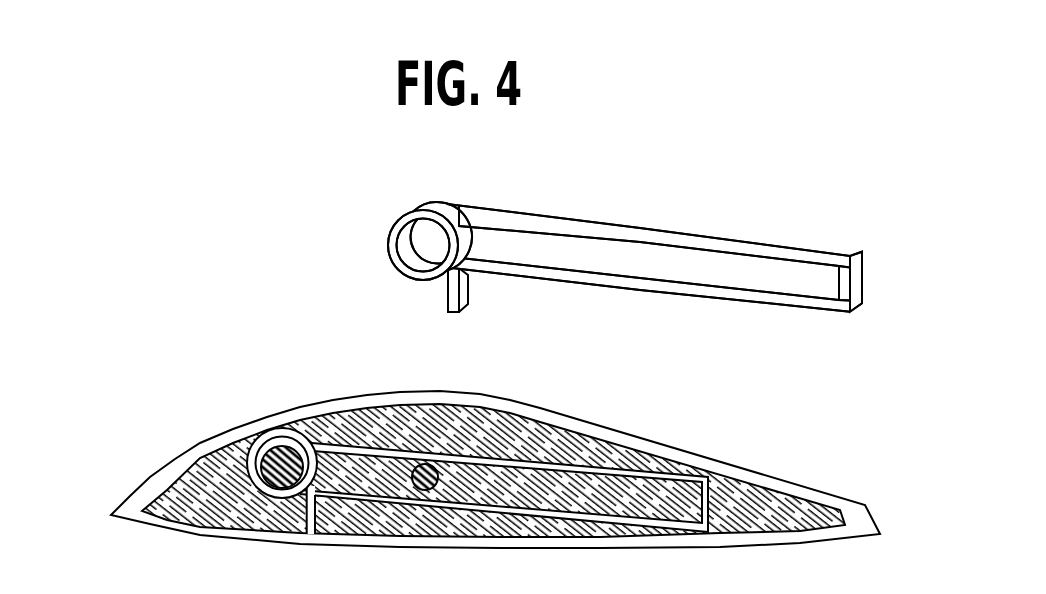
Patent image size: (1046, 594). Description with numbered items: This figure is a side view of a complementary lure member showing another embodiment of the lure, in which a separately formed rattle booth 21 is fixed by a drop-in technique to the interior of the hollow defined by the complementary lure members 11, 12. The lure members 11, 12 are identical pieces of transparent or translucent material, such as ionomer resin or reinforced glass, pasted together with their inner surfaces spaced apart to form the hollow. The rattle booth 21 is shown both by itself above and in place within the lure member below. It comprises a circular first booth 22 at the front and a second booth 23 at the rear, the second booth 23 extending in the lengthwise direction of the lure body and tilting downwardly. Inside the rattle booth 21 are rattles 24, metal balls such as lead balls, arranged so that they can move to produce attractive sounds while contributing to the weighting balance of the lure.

The complementary lure member 11 is at (490, 470).
The complementary lure member 12 is at (704, 458).
The rattle booth 21 is at (540, 215).
The first booth 22 is at (400, 273).
The second booth 23 is at (762, 245).
The rattles 24 is at (288, 447).